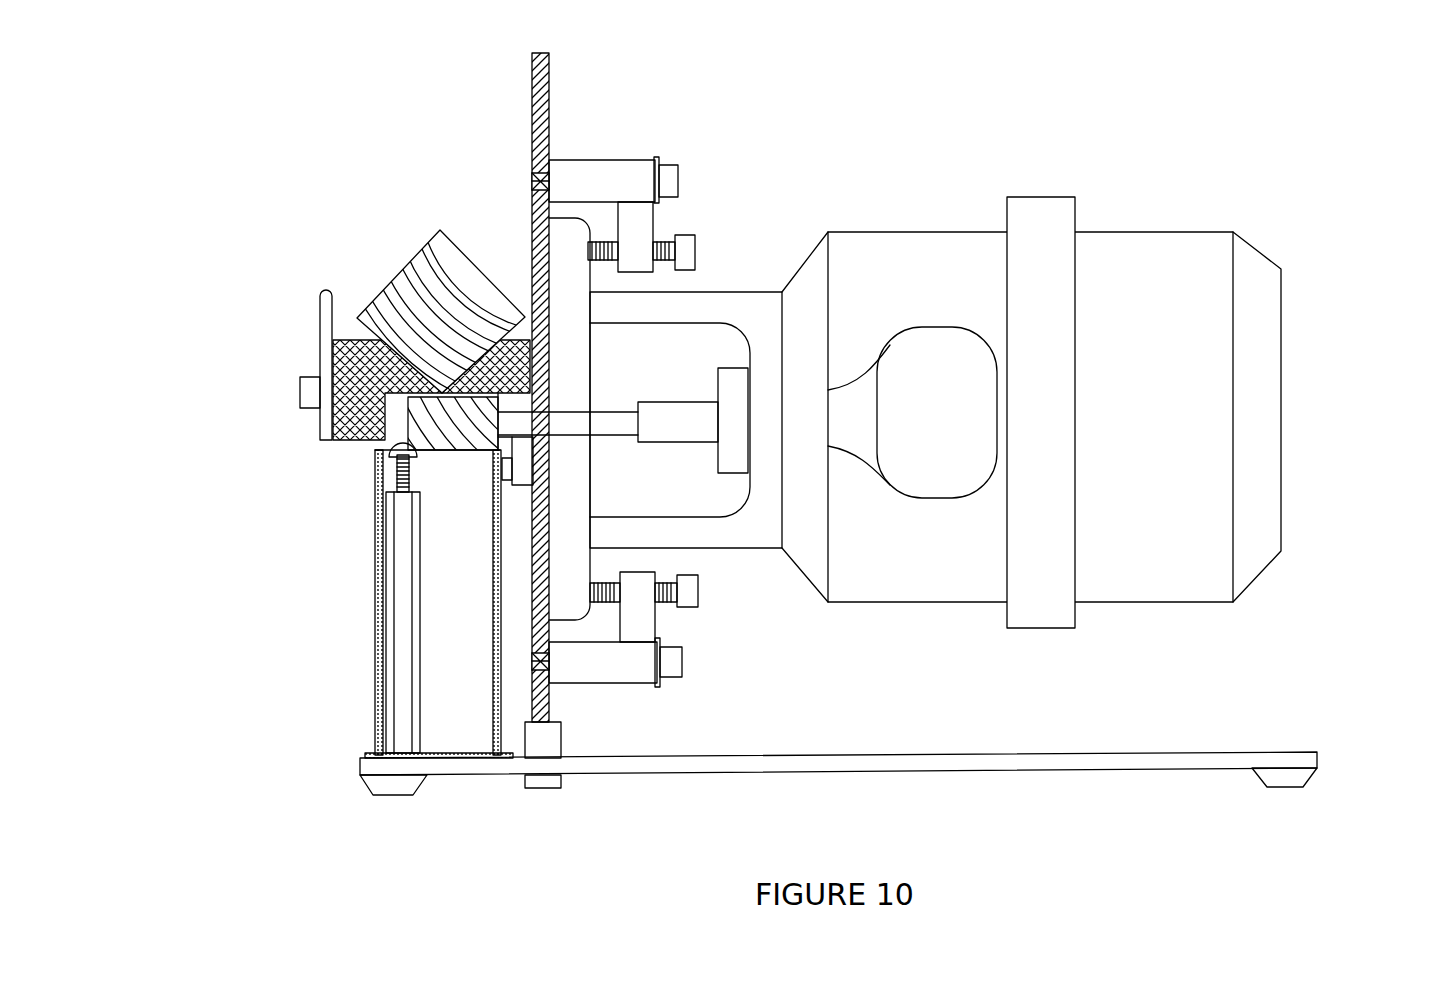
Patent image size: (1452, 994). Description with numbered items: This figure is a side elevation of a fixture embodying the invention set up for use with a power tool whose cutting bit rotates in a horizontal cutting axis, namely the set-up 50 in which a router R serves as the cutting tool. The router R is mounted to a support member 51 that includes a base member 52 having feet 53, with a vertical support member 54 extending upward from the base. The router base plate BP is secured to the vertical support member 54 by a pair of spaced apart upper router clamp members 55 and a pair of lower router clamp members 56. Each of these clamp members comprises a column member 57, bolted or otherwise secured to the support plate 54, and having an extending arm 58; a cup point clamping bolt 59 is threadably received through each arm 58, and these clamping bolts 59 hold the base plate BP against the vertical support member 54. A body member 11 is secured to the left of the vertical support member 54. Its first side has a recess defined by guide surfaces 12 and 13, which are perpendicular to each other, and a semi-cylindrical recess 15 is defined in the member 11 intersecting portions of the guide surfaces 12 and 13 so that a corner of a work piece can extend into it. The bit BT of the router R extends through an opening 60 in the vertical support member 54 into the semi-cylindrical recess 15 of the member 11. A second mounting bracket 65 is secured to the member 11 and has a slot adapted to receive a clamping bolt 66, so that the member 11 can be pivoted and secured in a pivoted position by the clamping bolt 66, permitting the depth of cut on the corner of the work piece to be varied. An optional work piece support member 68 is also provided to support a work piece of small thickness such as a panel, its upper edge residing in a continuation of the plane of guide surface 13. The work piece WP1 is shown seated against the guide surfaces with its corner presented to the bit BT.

The body member 11 is at (342, 415).
The guide surface 12 is at (493, 355).
The guide surface 13 is at (353, 362).
The semi-cylindrical recess 15 is at (351, 593).
The set-up 50 is at (918, 186).
The support member 51 is at (701, 725).
The base member 52 is at (838, 730).
The feet 53 is at (854, 810).
The vertical support member 54 is at (629, 366).
The upper router clamp member 55 is at (629, 152).
The lower router clamp member 56 is at (605, 700).
The column member 57 is at (722, 653).
The extending arm 58 is at (677, 407).
The cup point clamping bolt 59 is at (749, 409).
The opening 60 is at (623, 417).
The second mounting bracket 65 is at (400, 552).
The clamping bolt 66 is at (368, 602).
The work piece support member 68 is at (317, 293).
The router base plate BP is at (580, 487).
The bit BT is at (620, 305).
The workpiece WP1 is at (505, 209).
The router R is at (1109, 383).